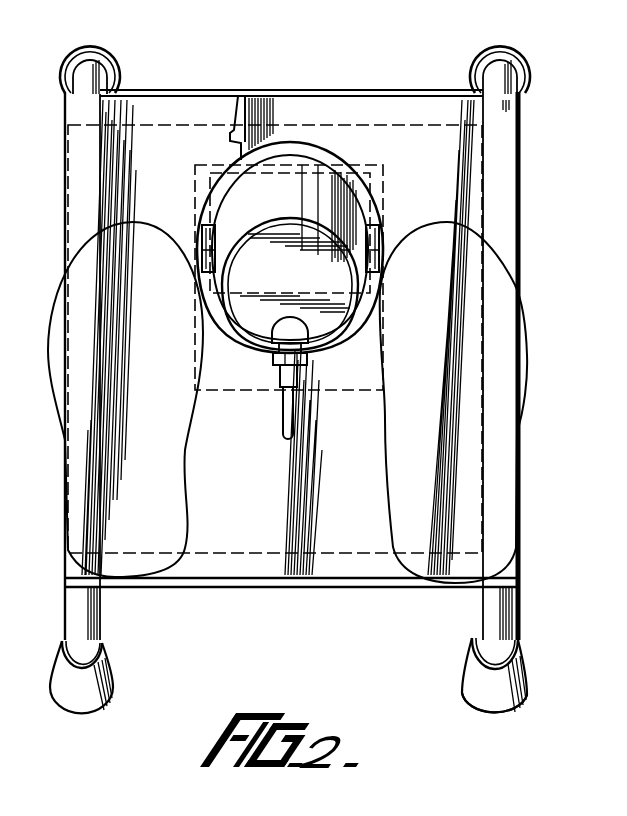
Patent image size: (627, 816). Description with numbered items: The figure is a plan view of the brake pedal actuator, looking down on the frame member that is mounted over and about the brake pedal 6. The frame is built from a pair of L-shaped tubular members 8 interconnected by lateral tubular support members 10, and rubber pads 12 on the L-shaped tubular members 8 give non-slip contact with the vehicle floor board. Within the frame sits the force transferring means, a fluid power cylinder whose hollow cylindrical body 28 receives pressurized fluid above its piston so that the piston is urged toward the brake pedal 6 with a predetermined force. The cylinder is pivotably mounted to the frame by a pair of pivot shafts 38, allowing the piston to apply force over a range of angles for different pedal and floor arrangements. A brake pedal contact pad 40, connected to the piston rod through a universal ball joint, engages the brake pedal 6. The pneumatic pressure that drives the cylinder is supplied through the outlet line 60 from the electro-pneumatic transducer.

The lateral tubular support member 10 is at (367, 92).
The hollow cylindrical body 28 is at (288, 163).
The brake pedal contact pad 40 is at (242, 96).
The pivot shaft 38 is at (203, 248).
The brake pedal 6 is at (273, 295).
The outlet line 60 is at (283, 421).
The L-shaped tubular member 8 is at (102, 615).
The rubber pad 12 is at (470, 677).